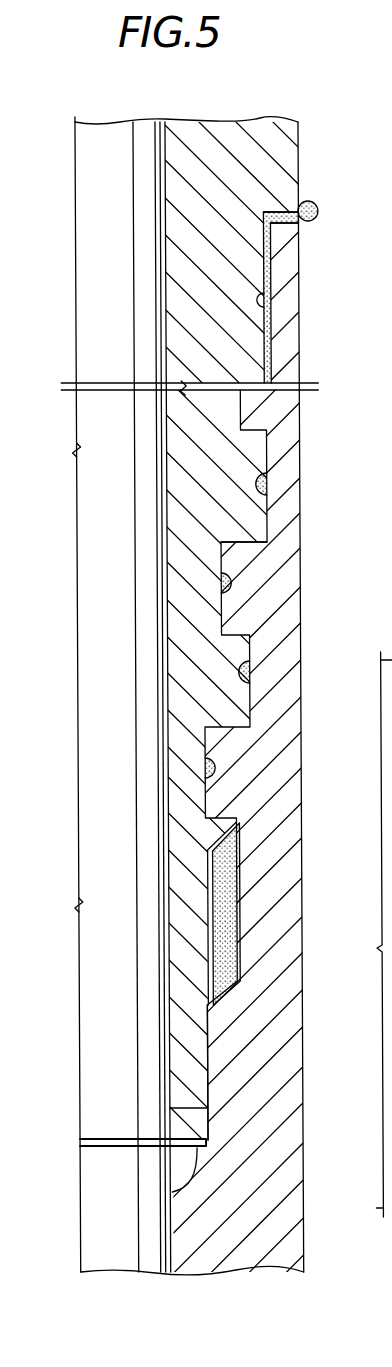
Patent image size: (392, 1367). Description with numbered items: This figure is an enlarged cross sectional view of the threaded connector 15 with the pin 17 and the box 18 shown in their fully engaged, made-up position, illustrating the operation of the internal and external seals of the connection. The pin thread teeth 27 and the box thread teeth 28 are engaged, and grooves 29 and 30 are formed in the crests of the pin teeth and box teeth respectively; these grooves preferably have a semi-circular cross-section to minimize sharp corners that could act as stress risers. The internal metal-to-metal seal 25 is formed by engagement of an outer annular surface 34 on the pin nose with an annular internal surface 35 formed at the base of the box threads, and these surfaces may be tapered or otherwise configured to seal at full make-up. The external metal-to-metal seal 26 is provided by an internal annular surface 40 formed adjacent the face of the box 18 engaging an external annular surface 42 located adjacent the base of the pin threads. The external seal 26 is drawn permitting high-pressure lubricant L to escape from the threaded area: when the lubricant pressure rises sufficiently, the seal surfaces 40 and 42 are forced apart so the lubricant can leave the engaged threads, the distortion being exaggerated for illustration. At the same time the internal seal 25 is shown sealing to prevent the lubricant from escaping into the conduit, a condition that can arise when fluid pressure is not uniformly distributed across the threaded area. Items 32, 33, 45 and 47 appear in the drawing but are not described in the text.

The threaded connector 15 is at (104, 918).
The pin member 17 is at (160, 1104).
The box member 18 is at (300, 737).
The internal metal-to-metal seal 25 is at (125, 1087).
The external metal-to-metal seal 26 is at (329, 276).
The pin thread teeth 27 is at (260, 448).
The box thread teeth 28 is at (230, 554).
The groove 29 is at (252, 480).
The groove 30 is at (228, 582).
The lip 32 is at (172, 1195).
The plate 33 is at (173, 1157).
The outer annular surface 34 is at (212, 1035).
The annular internal surface 35 is at (200, 1073).
The internal annular surface 40 is at (268, 310).
The external annular surface 42 is at (263, 224).
The flange 45 is at (274, 211).
The seal 47 is at (317, 219).
The lubricant L is at (316, 202).